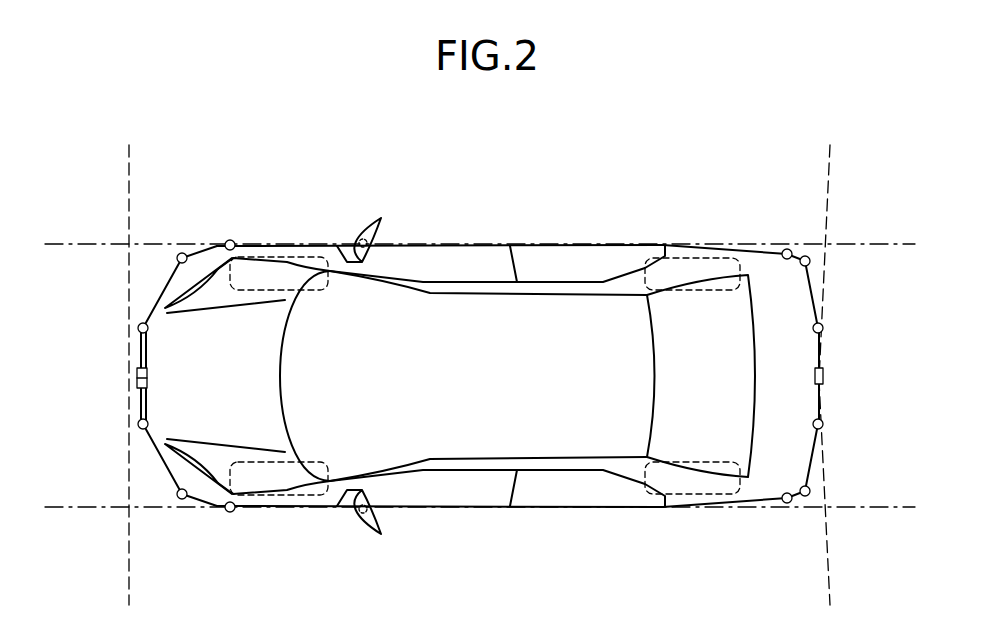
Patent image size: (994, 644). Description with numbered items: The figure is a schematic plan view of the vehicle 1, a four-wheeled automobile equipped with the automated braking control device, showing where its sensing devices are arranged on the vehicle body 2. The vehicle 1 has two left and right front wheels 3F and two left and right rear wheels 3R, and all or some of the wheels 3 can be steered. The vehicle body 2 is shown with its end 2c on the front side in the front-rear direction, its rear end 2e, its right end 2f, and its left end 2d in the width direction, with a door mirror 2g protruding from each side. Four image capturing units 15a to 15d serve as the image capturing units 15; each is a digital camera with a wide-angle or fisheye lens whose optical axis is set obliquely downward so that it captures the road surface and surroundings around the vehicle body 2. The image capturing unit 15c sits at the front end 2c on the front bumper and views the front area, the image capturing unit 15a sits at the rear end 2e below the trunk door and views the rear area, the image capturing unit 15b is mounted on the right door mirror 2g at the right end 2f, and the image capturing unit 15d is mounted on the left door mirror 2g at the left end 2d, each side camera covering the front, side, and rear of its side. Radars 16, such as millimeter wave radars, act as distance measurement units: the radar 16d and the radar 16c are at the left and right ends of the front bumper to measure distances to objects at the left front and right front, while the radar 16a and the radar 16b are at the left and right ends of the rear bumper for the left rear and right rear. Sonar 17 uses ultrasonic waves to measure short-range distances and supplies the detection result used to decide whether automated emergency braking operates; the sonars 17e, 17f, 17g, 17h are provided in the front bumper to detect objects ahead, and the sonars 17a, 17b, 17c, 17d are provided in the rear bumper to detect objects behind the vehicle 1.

The vehicle 1 is at (601, 156).
The vehicle body 2 is at (766, 243).
The end on the front side 2c is at (138, 393).
The left end 2d is at (587, 508).
The rear end 2e is at (822, 400).
The right end 2f is at (596, 243).
The door mirror 2g is at (382, 219).
The wheels 3 is at (485, 372).
The front wheels 3F is at (277, 256).
The rear wheels 3R is at (690, 256).
The image capturing unit 15 is at (488, 394).
The image capturing unit 15a is at (823, 376).
The image capturing unit 15b is at (363, 238).
The image capturing unit 15c is at (138, 376).
The image capturing unit 15d is at (363, 514).
The radar 16 is at (488, 366).
The radar 16a is at (787, 503).
The radar 16b is at (788, 250).
The radar 16c is at (227, 241).
The radar 16d is at (230, 512).
The sonar 17 is at (486, 351).
The sonar 17a is at (810, 491).
The sonar 17b is at (824, 424).
The sonar 17c is at (822, 326).
The sonar 17d is at (807, 257).
The sonar 17e is at (177, 260).
The sonar 17f is at (139, 328).
The sonar 17g is at (138, 426).
The sonar 17h is at (177, 493).